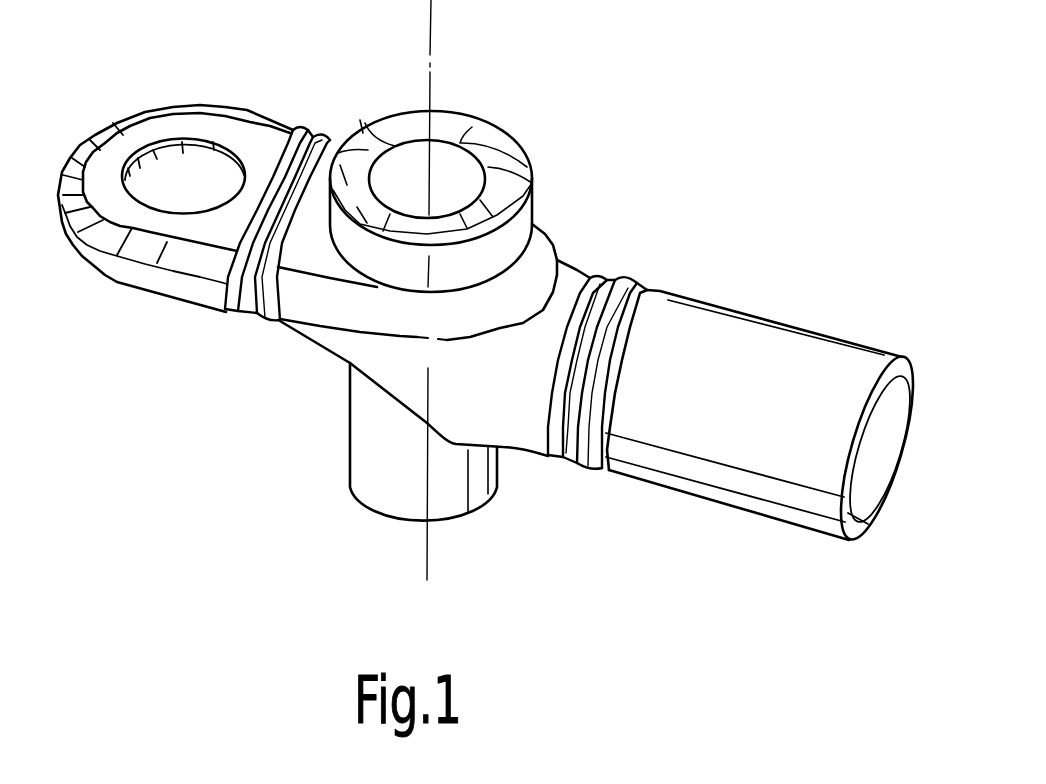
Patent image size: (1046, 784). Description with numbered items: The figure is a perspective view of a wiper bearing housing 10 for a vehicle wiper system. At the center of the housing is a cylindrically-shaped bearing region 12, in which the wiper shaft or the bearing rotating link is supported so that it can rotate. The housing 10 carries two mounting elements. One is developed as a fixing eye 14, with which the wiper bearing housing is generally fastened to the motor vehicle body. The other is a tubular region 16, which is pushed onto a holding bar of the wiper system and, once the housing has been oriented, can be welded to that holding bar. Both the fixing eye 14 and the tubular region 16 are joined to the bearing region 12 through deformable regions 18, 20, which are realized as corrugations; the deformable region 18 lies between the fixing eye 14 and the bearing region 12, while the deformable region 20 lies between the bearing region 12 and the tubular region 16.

The wiper bearing housing 10 is at (493, 290).
The bearing region 12 is at (485, 138).
The fixing eye 14 is at (150, 252).
The tubular region 16 is at (780, 318).
The deformable region 18 is at (245, 312).
The deformable region 20 is at (576, 478).